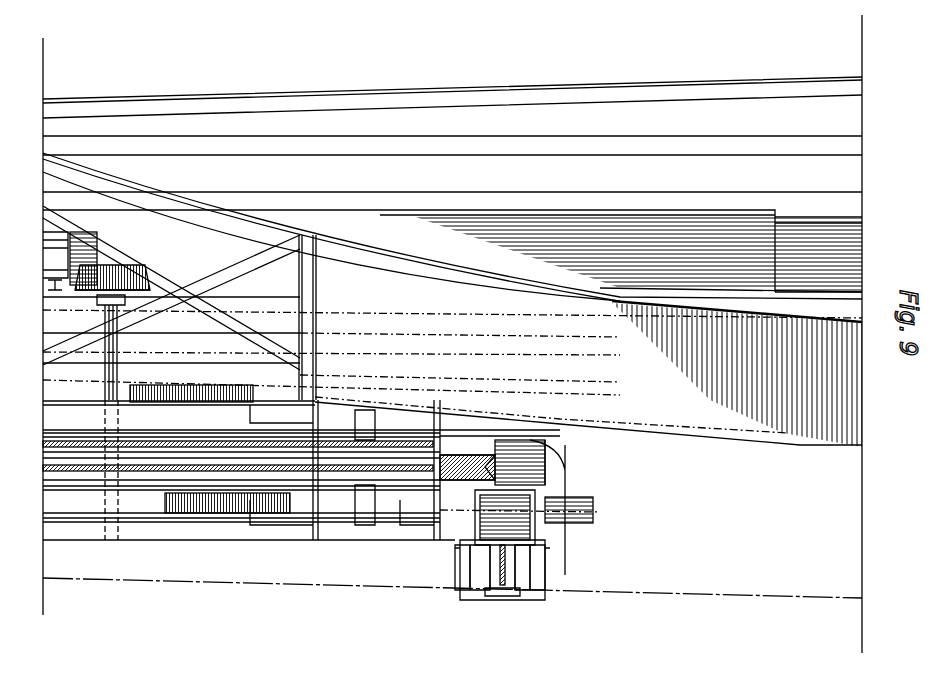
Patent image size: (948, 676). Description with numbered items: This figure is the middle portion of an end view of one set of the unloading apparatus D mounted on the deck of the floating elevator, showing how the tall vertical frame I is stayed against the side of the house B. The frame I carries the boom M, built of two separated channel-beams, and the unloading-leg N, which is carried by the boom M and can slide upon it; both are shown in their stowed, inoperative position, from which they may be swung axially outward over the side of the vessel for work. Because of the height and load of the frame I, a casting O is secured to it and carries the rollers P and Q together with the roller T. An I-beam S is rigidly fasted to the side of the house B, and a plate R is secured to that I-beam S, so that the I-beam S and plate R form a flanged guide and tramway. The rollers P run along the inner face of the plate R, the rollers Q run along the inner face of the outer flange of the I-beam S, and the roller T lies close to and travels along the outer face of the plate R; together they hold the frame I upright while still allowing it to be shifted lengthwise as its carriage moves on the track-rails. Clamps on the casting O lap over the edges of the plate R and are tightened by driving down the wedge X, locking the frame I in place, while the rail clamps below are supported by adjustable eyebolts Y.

The boom M is at (445, 140).
The girder G is at (452, 143).
The unloading apparatus D is at (452, 308).
The vertical frame I is at (199, 303).
The wedge X is at (55, 261).
The adjustable eyebolts Y is at (152, 290).
The unloading-leg N is at (165, 440).
The rollers Q is at (478, 628).
The casting O is at (513, 502).
The roller T is at (530, 518).
The plate R is at (510, 530).
The I-beam S is at (500, 594).
The rollers P is at (530, 588).
The house B is at (680, 596).